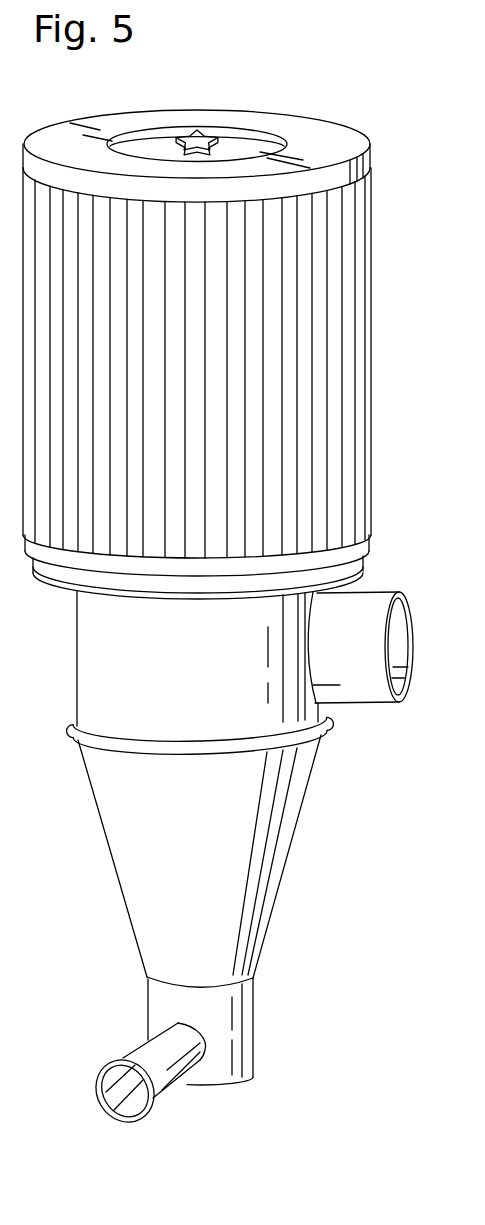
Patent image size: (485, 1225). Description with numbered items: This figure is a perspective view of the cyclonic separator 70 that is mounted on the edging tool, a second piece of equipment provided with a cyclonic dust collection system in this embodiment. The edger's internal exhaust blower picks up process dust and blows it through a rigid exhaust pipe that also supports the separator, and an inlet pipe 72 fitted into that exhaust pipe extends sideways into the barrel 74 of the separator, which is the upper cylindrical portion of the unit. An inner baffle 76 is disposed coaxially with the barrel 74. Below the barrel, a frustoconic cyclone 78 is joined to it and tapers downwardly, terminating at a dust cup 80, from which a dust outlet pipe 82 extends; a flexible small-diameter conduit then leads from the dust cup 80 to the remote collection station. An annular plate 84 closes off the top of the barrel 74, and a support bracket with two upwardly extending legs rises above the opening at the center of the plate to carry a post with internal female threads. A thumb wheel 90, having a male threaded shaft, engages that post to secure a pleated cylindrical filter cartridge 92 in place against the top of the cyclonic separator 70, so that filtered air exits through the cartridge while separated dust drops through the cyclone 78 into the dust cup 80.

The cyclonic separator 70 is at (248, 294).
The inlet pipe 72 is at (396, 671).
The barrel 74 is at (88, 708).
The inner baffle 76 is at (436, 646).
The frustoconic cyclone 78 is at (285, 845).
The dust cup 80 is at (243, 1043).
The dust outlet pipe 82 is at (140, 1050).
The annular plate 84 is at (363, 568).
The thumb wheel 90 is at (197, 138).
The pleated cylindrical filter cartridge 92 is at (360, 242).